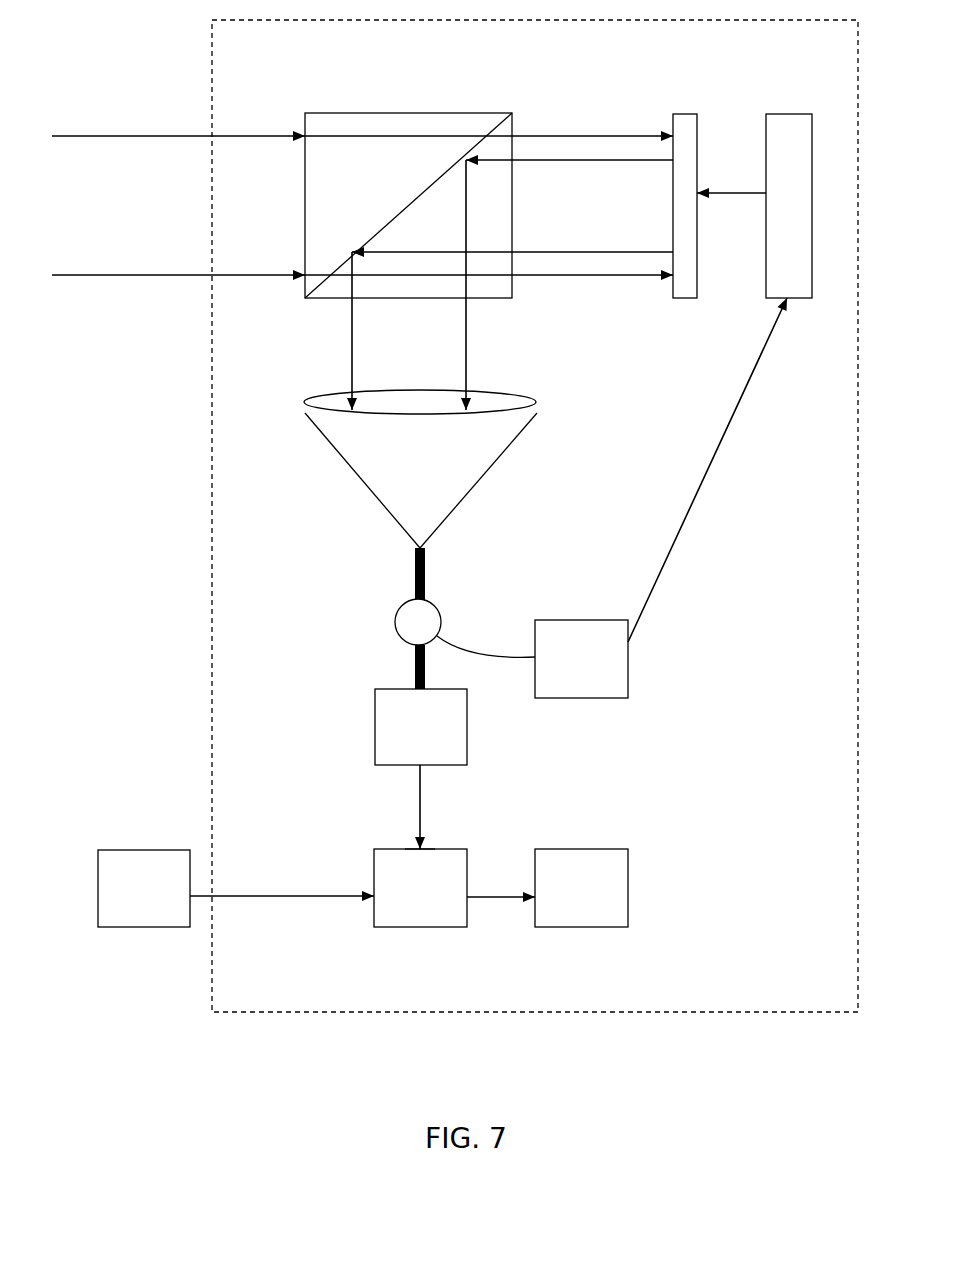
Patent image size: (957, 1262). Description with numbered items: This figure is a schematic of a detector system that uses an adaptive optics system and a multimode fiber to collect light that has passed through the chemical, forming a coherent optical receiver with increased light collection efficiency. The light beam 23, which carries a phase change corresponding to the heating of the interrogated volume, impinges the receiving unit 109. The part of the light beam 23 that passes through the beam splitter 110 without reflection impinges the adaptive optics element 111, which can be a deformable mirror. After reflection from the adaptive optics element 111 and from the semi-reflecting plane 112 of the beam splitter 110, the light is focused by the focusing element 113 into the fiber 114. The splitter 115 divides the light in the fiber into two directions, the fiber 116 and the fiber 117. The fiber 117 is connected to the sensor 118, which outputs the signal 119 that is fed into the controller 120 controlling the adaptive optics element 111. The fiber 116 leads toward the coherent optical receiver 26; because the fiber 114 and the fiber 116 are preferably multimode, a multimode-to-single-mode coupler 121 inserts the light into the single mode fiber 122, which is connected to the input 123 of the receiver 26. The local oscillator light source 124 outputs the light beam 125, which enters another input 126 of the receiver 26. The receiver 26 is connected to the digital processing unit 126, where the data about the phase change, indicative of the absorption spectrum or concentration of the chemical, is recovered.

The receiving unit 109 is at (535, 516).
The light beam 23 is at (362, 270).
The beam splitter 110 is at (408, 189).
The semi-reflecting plane 112 is at (408, 205).
The adaptive optics element 111 is at (672, 178).
The controller 120 is at (754, 178).
The focusing element 113 is at (397, 452).
The fiber 114 is at (451, 570).
The splitter 115 is at (395, 615).
The fiber 116 is at (385, 667).
The fiber 117 is at (486, 634).
The sensor 118 is at (581, 659).
The signal 119 is at (707, 470).
The multimode-to-single-mode coupler 121 is at (421, 727).
The single mode fiber 122 is at (399, 807).
The input 123 is at (443, 835).
The coherent optical receiver 26 is at (420, 888).
The local oscillator light source 124 is at (144, 888).
The light beam 125 is at (282, 882).
The digital processing unit 126 is at (476, 888).